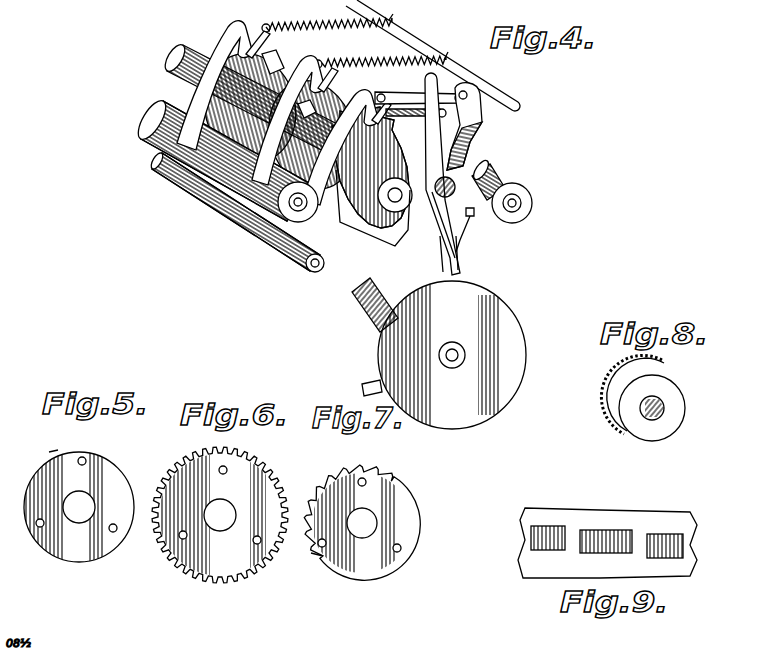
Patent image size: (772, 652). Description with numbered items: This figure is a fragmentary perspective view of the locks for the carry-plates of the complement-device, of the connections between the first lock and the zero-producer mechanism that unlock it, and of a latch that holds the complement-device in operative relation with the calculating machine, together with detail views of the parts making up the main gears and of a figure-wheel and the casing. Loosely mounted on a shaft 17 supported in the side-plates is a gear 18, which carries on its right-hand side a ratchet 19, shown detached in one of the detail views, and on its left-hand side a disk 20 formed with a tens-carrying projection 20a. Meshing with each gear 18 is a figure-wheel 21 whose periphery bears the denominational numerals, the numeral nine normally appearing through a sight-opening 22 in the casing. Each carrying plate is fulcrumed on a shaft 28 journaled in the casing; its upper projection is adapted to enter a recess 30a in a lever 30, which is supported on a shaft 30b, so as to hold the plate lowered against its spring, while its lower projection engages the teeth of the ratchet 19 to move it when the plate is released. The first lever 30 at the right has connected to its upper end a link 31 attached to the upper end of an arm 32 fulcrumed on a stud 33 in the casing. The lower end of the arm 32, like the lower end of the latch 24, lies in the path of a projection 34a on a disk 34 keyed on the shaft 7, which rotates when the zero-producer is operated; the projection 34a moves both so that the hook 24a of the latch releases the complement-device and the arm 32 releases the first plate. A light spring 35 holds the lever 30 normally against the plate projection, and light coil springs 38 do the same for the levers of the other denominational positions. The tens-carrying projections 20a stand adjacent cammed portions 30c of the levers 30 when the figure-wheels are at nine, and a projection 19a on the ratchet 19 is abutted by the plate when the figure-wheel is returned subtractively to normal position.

In FIG. 4, the shaft 7 is at (326, 266).
In FIG. 4, the shaft 17 is at (398, 242).
In FIG. 6, the gear 18 is at (220, 515).
In FIG. 7, the ratchet 19 is at (405, 518).
In FIG. 4, the projection 19a is at (390, 208).
In FIG. 7, the projection 19a is at (312, 556).
In FIG. 4, the disk 20 is at (322, 94).
In FIG. 5, the disk 20 is at (122, 478).
In FIG. 4, the tens-carrying projection 20a is at (186, 78).
In FIG. 5, the tens-carrying projection 20a is at (52, 454).
In FIG. 8, the figure-wheel 21 is at (680, 402).
In FIG. 9, the figure-wheel 21 is at (665, 534).
In FIG. 9, the sight-opening 22 is at (598, 530).
In FIG. 4, the latch 24 is at (458, 224).
In FIG. 4, the hook 24a is at (462, 262).
In FIG. 4, the shaft 28 is at (522, 202).
In FIG. 4, the lever 30 is at (172, 62).
In FIG. 4, the recess 30a is at (236, 34).
In FIG. 4, the shaft 30b is at (300, 206).
In FIG. 4, the cammed portion 30c is at (264, 30).
In FIG. 4, the link 31 is at (393, 92).
In FIG. 4, the arm 32 is at (478, 128).
In FIG. 4, the stud 33 is at (455, 182).
In FIG. 4, the disk 34 is at (452, 380).
In FIG. 4, the projection 34a is at (370, 385).
In FIG. 4, the spring 35 is at (390, 130).
In FIG. 4, the coil spring 38 is at (363, 62).